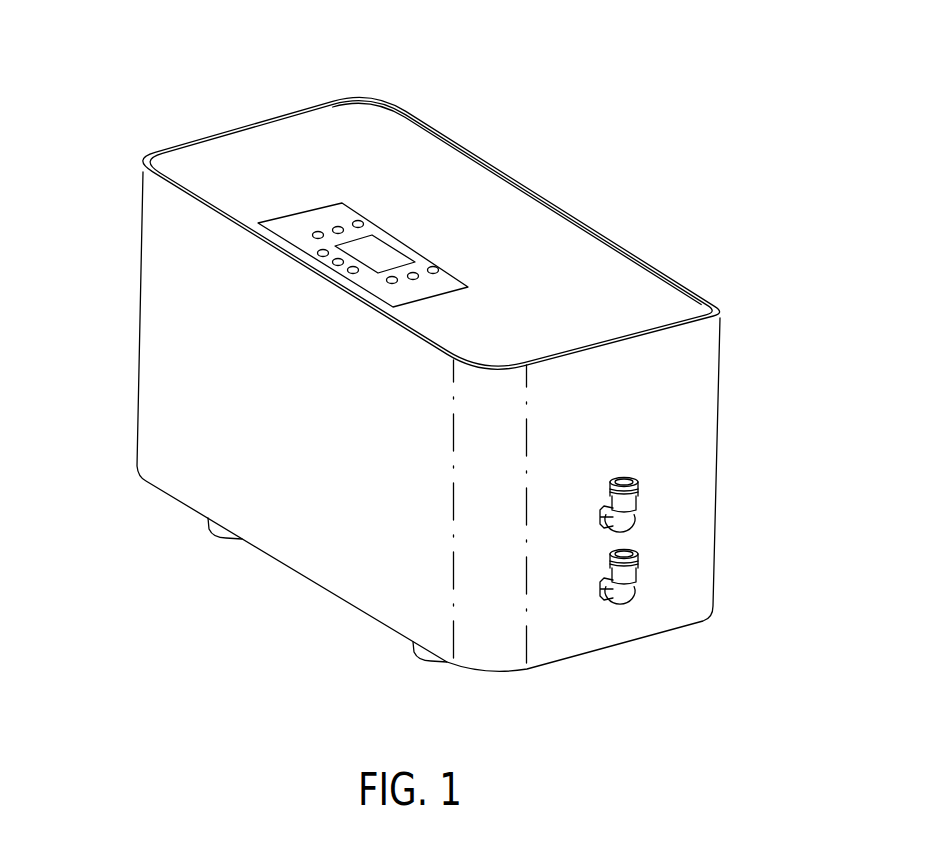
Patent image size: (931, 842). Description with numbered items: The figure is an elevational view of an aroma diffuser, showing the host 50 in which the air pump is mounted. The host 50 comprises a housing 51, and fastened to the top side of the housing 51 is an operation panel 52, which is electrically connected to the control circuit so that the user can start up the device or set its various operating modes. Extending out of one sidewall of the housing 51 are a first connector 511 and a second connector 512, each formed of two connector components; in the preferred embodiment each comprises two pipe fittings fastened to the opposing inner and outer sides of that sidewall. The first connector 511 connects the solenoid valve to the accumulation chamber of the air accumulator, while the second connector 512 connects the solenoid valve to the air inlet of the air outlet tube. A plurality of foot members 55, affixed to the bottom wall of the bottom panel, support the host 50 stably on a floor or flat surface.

The host 50 is at (255, 123).
The housing 51 is at (185, 357).
The operation panel 52 is at (370, 250).
The foot members 55 is at (222, 533).
The first connector 511 is at (628, 576).
The second connector 512 is at (633, 503).